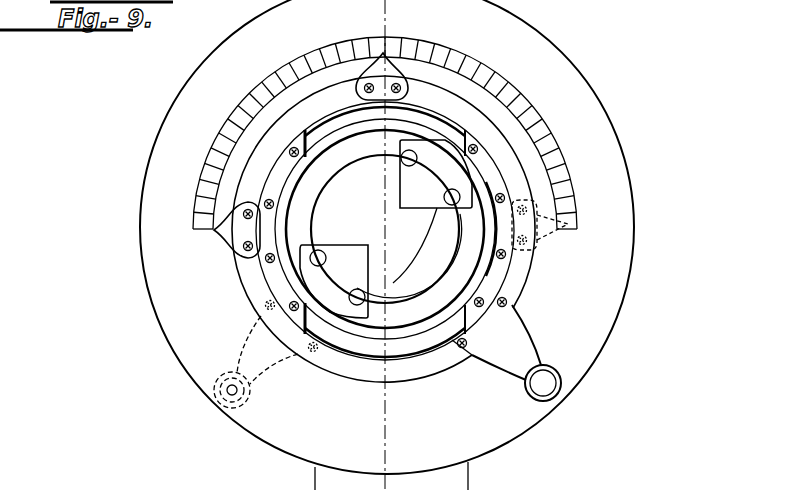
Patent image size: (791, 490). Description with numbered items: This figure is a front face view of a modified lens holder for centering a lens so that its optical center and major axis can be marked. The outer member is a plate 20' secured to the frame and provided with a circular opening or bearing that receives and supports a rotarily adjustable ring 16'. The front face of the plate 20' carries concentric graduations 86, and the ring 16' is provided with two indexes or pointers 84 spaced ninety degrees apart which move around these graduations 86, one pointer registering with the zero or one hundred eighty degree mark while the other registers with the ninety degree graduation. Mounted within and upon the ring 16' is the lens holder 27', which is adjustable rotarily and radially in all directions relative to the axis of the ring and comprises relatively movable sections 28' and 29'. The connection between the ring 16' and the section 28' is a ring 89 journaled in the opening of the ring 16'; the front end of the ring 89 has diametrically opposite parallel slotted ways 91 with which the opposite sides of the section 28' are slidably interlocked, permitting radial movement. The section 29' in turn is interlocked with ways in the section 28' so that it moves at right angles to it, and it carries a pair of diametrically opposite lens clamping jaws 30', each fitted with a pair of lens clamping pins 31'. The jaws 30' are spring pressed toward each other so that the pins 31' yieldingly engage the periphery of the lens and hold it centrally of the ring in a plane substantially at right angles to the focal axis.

The plate 20' is at (409, 245).
The graduations 86 is at (385, 129).
The rotarily adjustable ring 16' is at (395, 242).
The slotted ways 91 is at (482, 161).
The ring 89 is at (354, 120).
The section 28' is at (283, 154).
The lens holder 27' is at (383, 271).
The section 29' is at (384, 229).
The lens clamping jaws 30' is at (383, 221).
The lens clamping pins 31' is at (386, 229).
The indexes or pointers 84 is at (400, 78).